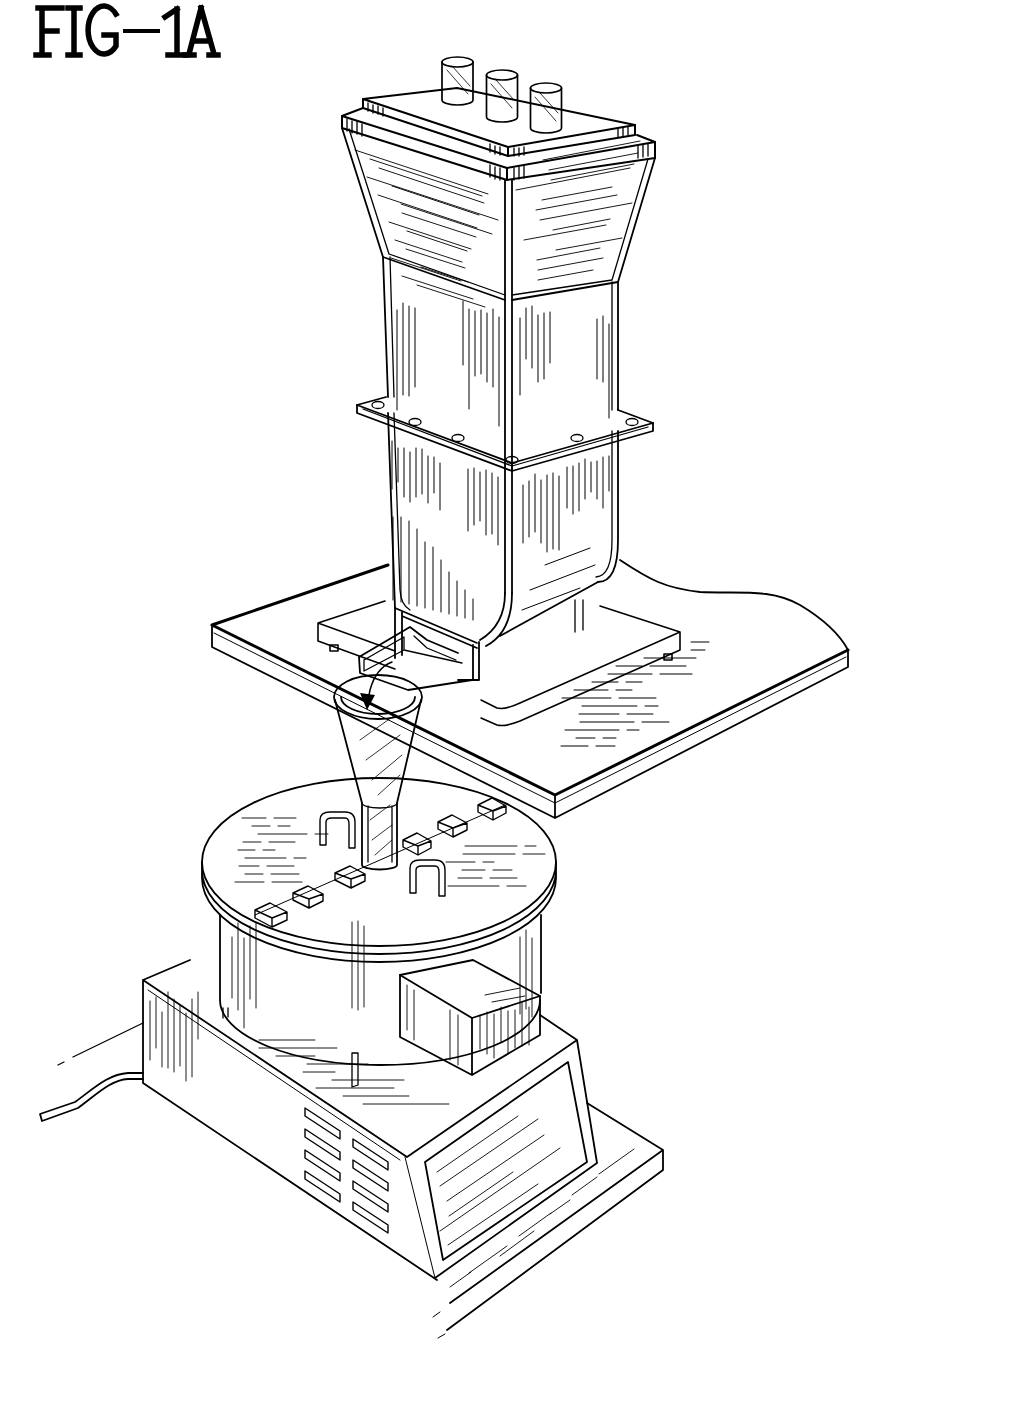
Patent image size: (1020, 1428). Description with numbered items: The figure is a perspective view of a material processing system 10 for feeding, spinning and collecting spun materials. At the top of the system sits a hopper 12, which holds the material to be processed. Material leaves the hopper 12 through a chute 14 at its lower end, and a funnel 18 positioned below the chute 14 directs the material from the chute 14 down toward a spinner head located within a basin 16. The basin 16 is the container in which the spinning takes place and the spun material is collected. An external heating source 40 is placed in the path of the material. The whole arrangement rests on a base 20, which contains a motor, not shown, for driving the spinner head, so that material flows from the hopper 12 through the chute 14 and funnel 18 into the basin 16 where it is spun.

The material processing system 10 is at (264, 381).
The hopper 12 is at (597, 347).
The chute 14 is at (358, 652).
The basin 16 is at (542, 950).
The funnel 18 is at (343, 753).
The base 20 is at (560, 1118).
The external heating source 40 is at (523, 1033).